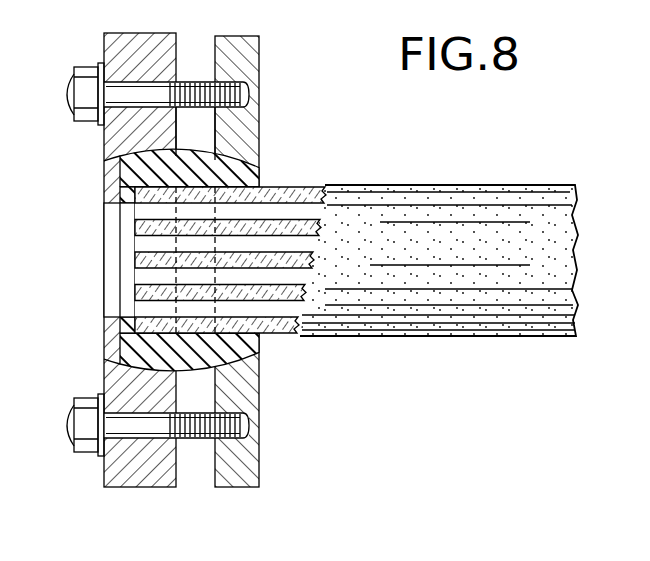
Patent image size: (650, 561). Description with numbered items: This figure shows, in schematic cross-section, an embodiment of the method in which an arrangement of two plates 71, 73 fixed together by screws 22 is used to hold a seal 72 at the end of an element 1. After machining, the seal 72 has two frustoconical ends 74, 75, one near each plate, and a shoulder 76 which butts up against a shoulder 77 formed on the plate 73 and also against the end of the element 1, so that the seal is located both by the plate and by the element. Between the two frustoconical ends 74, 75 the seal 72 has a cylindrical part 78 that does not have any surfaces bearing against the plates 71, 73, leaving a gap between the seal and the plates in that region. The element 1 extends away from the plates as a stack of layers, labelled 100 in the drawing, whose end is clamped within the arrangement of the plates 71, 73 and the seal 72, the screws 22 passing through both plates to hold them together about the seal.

The element 1 is at (457, 215).
The screws 22 is at (90, 88).
The plate 71 is at (240, 67).
The seal 72 is at (234, 155).
The plate 73 is at (150, 52).
The frustoconical end 74 is at (245, 174).
The frustoconical end 75 is at (140, 152).
The shoulder 76 is at (115, 207).
The shoulder 77 is at (122, 190).
The cylindrical part 78 is at (194, 152).
The panel layers 100 is at (312, 212).